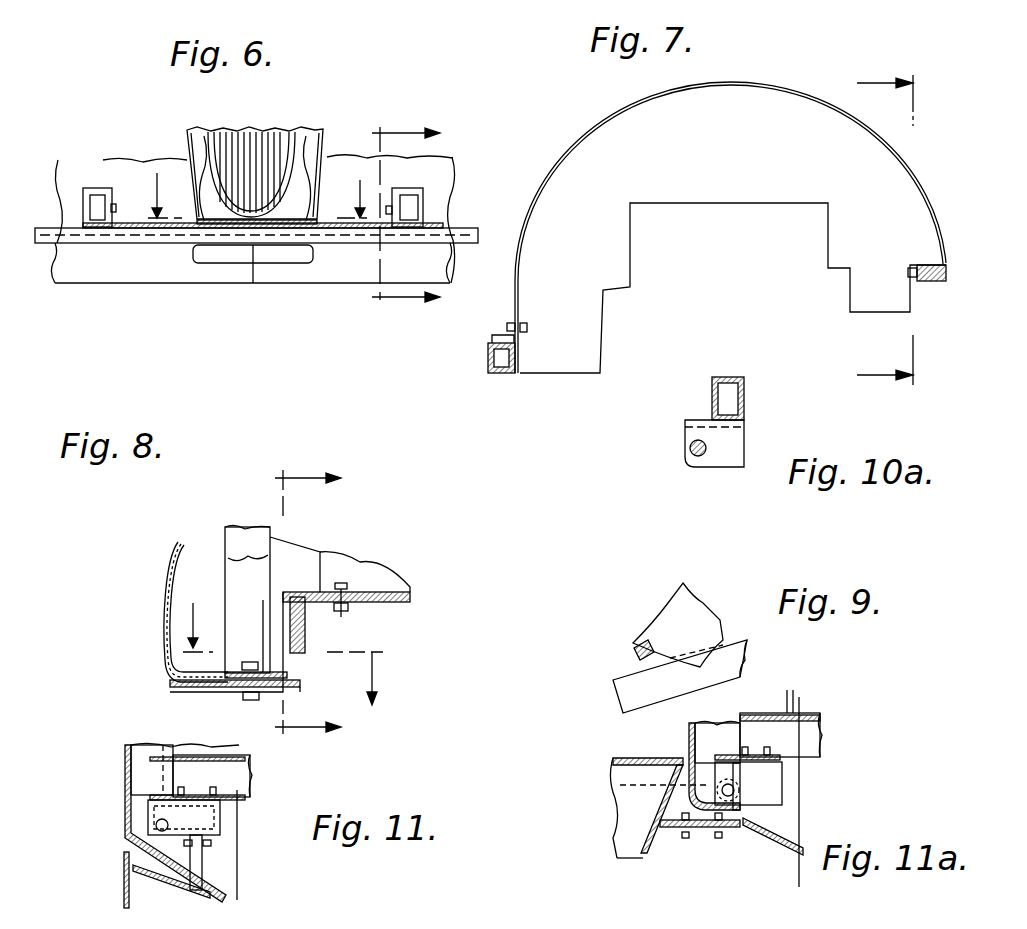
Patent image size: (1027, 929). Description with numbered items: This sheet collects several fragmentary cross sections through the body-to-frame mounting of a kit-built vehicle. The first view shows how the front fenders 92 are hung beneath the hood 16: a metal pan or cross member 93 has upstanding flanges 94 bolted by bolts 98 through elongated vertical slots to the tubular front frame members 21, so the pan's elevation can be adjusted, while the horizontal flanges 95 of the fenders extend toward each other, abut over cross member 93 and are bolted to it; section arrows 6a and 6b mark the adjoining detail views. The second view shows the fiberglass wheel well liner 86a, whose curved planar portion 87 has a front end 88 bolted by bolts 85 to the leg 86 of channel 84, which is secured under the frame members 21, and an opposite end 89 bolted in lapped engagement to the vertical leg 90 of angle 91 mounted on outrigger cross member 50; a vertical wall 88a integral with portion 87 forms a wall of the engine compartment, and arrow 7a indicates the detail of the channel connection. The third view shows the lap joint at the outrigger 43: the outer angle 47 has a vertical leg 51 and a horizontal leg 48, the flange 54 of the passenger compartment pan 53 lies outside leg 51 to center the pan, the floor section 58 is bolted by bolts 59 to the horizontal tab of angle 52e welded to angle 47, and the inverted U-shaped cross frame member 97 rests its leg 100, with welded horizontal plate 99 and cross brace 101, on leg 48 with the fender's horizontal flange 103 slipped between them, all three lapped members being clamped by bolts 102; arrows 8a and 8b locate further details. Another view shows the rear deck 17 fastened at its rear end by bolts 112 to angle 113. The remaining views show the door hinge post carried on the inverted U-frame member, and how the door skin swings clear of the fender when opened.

In FIG. 6, the hood 16 is at (205, 128).
In FIG. 9, the rear deck 17 is at (662, 600).
In FIG. 6, the front frame member 21 is at (454, 180).
In FIG. 8, the outrigger 43 is at (298, 692).
In FIG. 8, the outer angle 47 is at (301, 684).
In FIG. 8, the horizontal leg 48 is at (172, 684).
In FIG. 7, the outrigger cross frame member 50 is at (488, 372).
In FIG. 8, the vertical leg 51 is at (293, 667).
In FIG. 8, the angle 52e is at (306, 606).
In FIG. 8, the passenger compartment pan 53 is at (411, 598).
In FIG. 8, the flange 54 is at (286, 618).
In FIG. 8, the floor section 58 is at (405, 586).
In FIG. 8, the bolt 59 is at (344, 582).
In FIG. 6, the channel 84 is at (65, 278).
In FIG. 7, the bolt 85 is at (932, 353).
In FIG. 7, the channel leg 86 is at (934, 282).
In FIG. 7, the wheel well liner 86a is at (624, 114).
In FIG. 7, the curved planar portion 87 is at (784, 88).
In FIG. 7, the front end 88 is at (951, 260).
In FIG. 7, the vertical wall 88a is at (720, 210).
In FIG. 7, the opposite end 89 is at (527, 323).
In FIG. 7, the vertical leg 90 is at (508, 324).
In FIG. 7, the angle 91 is at (492, 333).
In FIG. 6, the fender 92 is at (455, 198).
In FIG. 6, the metal pan or cross member 93 is at (116, 248).
In FIG. 6, the upstanding flange 94 is at (425, 188).
In FIG. 6, the flange 95 is at (324, 150).
In FIG. 10A, the inverted U-shaped cross frame member 97 is at (740, 382).
In FIG. 6, the bolt 98 is at (134, 227).
In FIG. 8, the horizontal plate 99 is at (176, 662).
In FIG. 8, the leg 100 is at (237, 532).
In FIG. 8, the cross brace 101 is at (225, 546).
In FIG. 8, the bolt 102 is at (252, 698).
In FIG. 8, the horizontal flange 103 is at (288, 648).
In FIG. 9, the bolt 112 is at (634, 650).
In FIG. 9, the angle 113 is at (678, 625).
In FIG. 6, the section line 6a is at (246, 195).
In FIG. 6, the section line 6b is at (405, 216).
In FIG. 7, the section line 7a is at (889, 235).
In FIG. 8, the section line 8a is at (308, 604).
In FIG. 8, the section line 8b is at (301, 641).